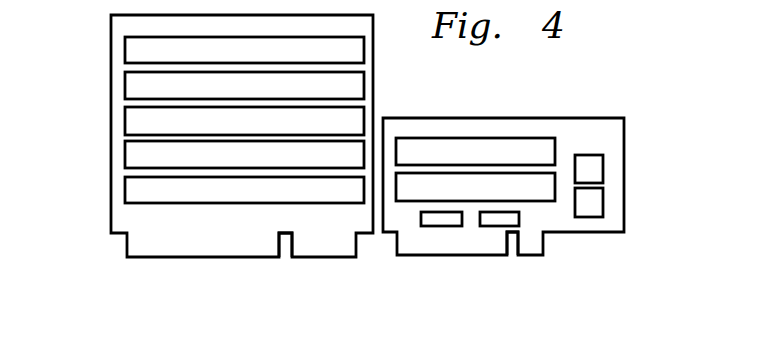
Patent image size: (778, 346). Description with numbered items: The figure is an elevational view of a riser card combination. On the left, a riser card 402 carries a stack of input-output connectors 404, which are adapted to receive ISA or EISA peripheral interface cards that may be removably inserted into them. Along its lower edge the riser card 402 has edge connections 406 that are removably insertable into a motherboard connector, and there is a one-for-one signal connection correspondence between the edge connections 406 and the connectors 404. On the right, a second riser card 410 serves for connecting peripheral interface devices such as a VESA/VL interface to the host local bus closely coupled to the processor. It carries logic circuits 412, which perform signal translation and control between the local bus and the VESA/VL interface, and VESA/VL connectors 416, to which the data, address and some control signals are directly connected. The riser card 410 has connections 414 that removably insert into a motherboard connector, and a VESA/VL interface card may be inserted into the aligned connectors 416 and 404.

The riser card 402 is at (111, 36).
The input-output connectors 404 is at (133, 54).
The edge connections 406 is at (304, 245).
The riser card 410 is at (588, 128).
The logic circuits 412 is at (597, 175).
The connections 414 is at (530, 243).
The VESA/VL connectors 416 is at (462, 160).